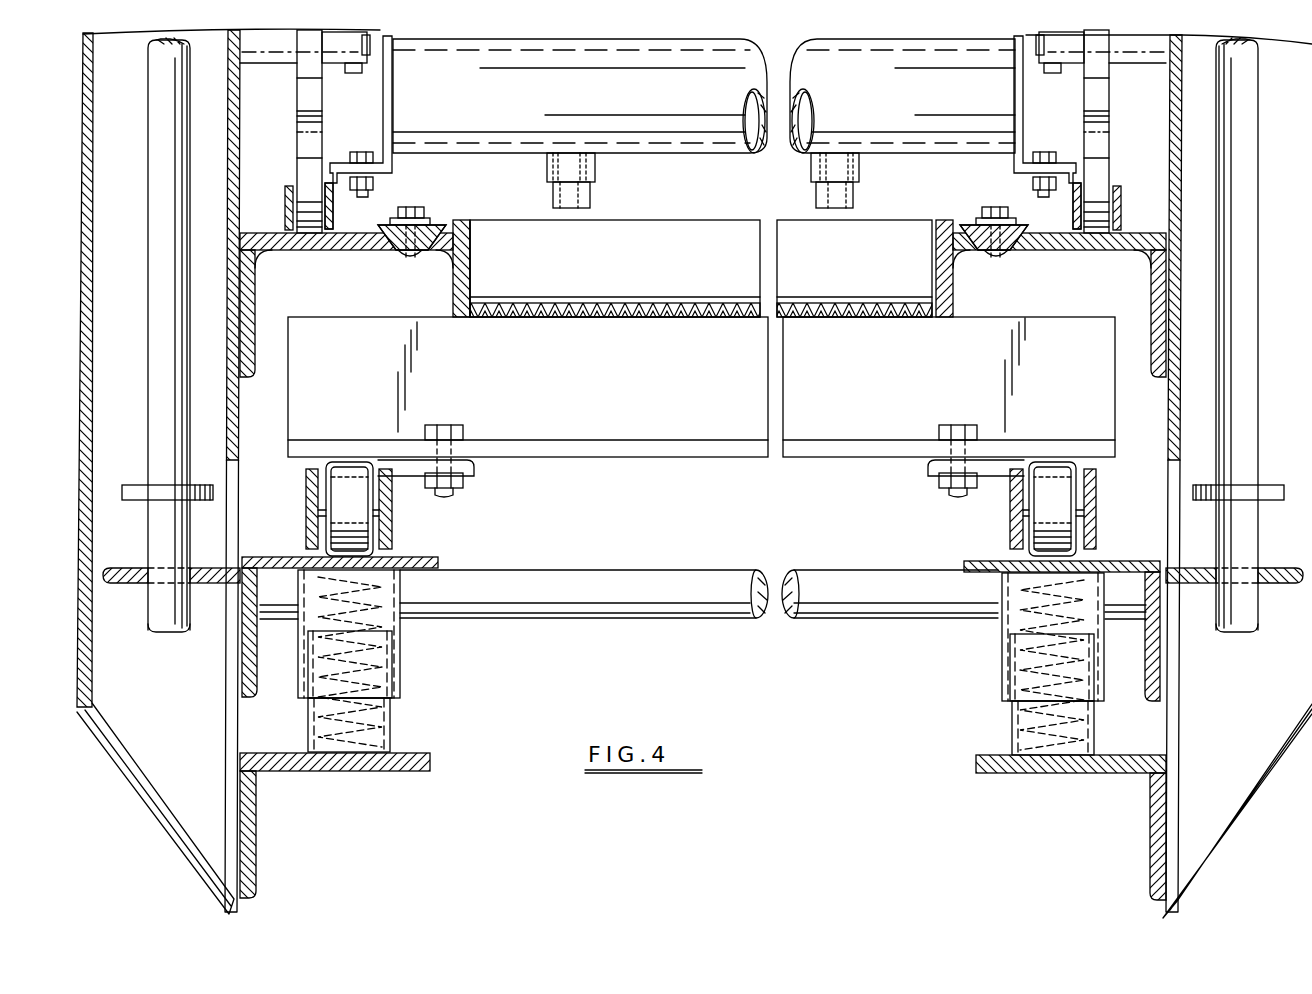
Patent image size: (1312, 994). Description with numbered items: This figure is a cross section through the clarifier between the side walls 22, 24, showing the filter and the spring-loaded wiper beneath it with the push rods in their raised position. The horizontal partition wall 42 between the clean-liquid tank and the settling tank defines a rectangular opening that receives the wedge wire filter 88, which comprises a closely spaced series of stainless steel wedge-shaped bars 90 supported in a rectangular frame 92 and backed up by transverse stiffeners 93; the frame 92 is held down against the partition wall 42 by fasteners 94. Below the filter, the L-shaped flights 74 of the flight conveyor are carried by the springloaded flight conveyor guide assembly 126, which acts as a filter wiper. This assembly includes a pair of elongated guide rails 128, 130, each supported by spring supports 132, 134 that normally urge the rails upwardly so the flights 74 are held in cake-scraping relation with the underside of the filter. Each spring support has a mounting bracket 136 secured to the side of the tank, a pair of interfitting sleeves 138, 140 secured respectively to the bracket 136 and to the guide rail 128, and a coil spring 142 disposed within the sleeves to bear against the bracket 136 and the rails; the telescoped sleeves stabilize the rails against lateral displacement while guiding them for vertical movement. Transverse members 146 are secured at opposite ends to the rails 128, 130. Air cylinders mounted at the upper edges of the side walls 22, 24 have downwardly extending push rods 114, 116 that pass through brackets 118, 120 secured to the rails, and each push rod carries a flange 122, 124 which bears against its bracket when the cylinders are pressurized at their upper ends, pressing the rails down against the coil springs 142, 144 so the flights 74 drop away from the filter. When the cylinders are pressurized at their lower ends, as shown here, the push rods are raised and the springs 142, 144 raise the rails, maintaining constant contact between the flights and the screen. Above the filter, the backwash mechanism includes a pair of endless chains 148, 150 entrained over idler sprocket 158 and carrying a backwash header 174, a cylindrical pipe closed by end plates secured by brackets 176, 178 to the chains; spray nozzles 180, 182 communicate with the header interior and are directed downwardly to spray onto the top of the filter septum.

The side wall 22 is at (88, 135).
The side wall 24 is at (1311, 100).
The horizontal partition wall 42 is at (300, 247).
The flights 74 is at (701, 407).
The filter 88 is at (705, 294).
The wedge-shaped bars 90 is at (620, 316).
The rectangular frame 92 is at (472, 263).
The transverse stiffeners 93 is at (855, 300).
The fasteners 94 is at (408, 258).
The push rod 114 is at (158, 210).
The push rod 116 is at (1250, 222).
The bracket 118 is at (138, 582).
The bracket 120 is at (1278, 573).
The flange 122 is at (148, 488).
The flange 124 is at (1270, 487).
The springloaded flight conveyor guide assembly 126 is at (586, 567).
The guide rail 128 is at (425, 558).
The guide rail 130 is at (978, 565).
The spring support 132 is at (400, 672).
The spring support 134 is at (996, 662).
The mounting bracket 136 is at (312, 770).
The sleeve 138 is at (390, 725).
The sleeve 140 is at (404, 637).
The coil spring 142 is at (405, 712).
The coil spring 144 is at (1008, 725).
The transverse members 146 is at (688, 576).
The endless chain 148 is at (285, 195).
The endless chain 150 is at (1120, 198).
The idler sprocket 158 is at (1108, 140).
The backwash header 174 is at (704, 96).
The bracket 176 is at (1012, 168).
The bracket 178 is at (395, 172).
The spray nozzle 180 is at (596, 173).
The spray nozzle 182 is at (859, 174).